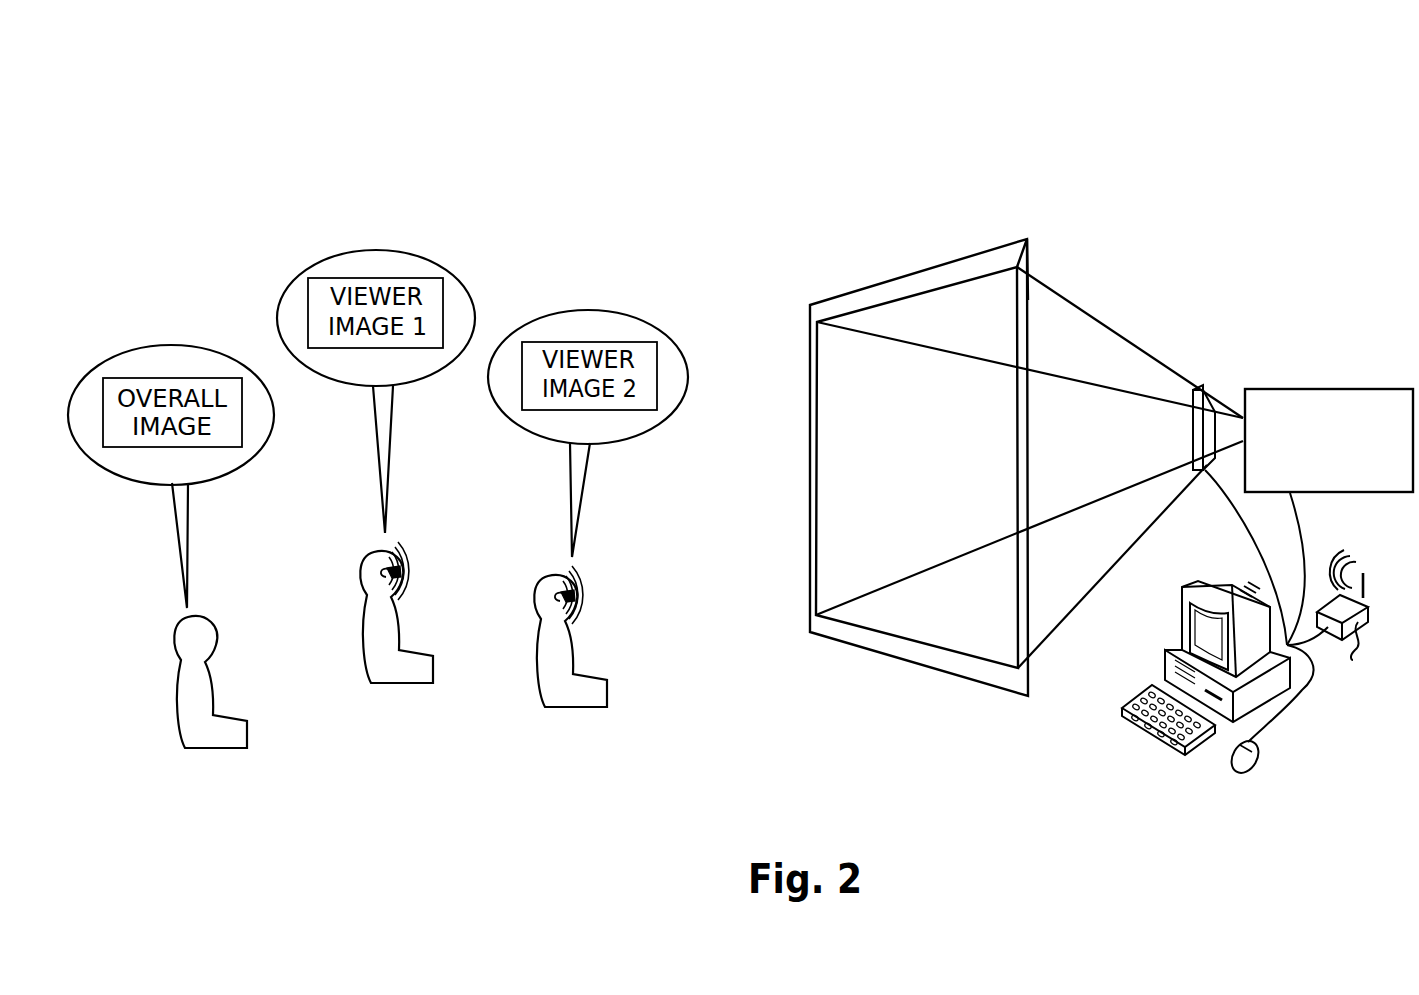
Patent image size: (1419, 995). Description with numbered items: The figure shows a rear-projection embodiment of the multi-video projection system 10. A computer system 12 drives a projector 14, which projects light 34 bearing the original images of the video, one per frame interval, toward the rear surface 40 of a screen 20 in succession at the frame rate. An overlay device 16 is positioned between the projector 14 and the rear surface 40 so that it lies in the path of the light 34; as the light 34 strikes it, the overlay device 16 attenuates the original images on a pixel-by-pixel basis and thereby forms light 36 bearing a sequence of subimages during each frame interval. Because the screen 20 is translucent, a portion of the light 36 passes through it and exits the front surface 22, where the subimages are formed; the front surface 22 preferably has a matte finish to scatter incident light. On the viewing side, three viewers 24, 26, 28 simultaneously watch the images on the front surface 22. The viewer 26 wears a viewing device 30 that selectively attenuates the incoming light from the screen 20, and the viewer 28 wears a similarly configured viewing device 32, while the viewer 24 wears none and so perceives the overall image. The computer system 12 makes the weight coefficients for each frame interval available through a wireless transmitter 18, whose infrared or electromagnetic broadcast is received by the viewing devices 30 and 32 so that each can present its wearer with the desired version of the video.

The multi-video projection system 10 is at (1180, 141).
The computer system 12 is at (1134, 765).
The projector 14 is at (1318, 466).
The overlay device 16 is at (1200, 388).
The wireless transmitter 18 is at (1348, 619).
The screen 20 is at (905, 660).
The front surface 22 is at (1012, 257).
The viewer 24 is at (188, 690).
The viewer 26 is at (377, 613).
The viewer 28 is at (552, 647).
The viewing device 30 is at (397, 583).
The viewing device 32 is at (573, 610).
The light 34 is at (1215, 412).
The light 36 is at (1192, 392).
The rear surface 40 is at (1030, 258).